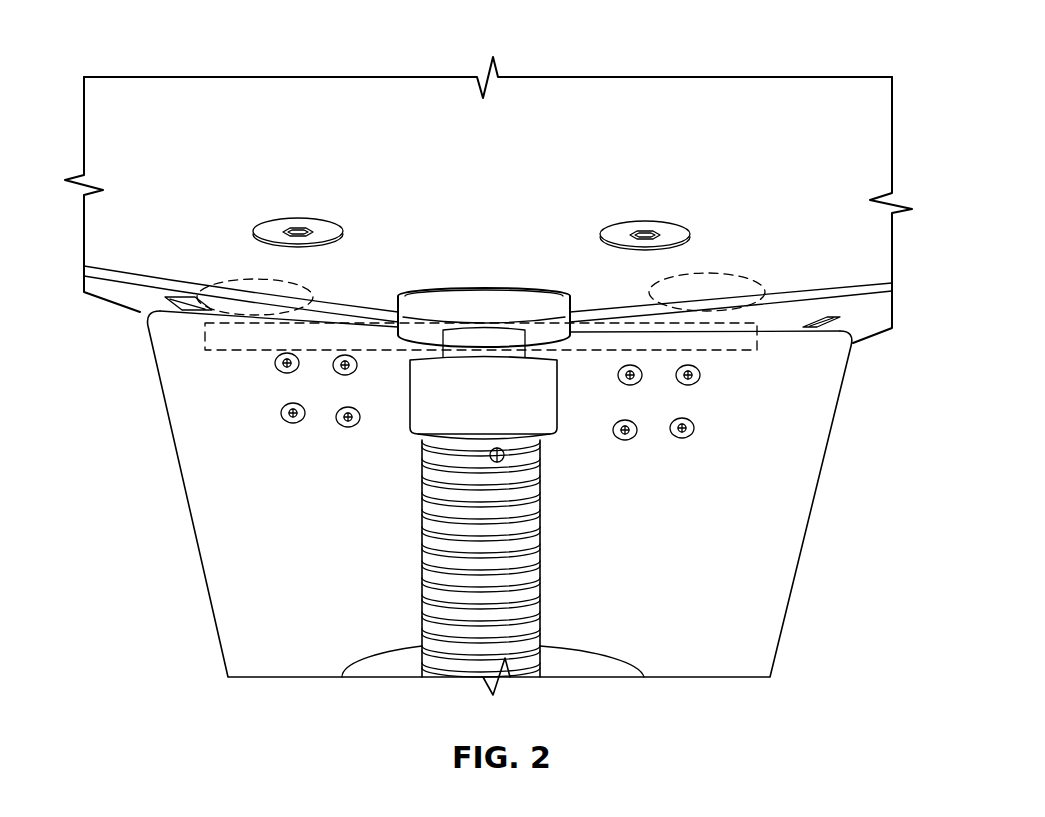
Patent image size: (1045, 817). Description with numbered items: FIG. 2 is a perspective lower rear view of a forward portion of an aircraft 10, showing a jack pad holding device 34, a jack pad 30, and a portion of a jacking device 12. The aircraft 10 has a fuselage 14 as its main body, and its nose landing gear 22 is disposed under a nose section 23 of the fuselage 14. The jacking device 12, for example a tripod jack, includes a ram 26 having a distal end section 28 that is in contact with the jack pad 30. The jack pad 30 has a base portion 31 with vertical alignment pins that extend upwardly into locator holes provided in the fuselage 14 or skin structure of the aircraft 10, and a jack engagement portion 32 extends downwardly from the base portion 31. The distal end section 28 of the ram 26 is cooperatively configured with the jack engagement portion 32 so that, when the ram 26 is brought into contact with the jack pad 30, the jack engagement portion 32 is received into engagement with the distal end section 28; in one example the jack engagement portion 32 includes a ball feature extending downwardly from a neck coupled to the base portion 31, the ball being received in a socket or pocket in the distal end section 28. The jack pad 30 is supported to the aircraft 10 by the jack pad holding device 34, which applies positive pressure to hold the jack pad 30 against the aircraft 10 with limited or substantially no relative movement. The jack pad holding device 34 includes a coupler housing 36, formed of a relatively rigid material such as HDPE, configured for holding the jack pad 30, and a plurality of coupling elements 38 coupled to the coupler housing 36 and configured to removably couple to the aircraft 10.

The aircraft 10 is at (762, 97).
The jacking device 12 is at (420, 567).
The fuselage 14 is at (870, 177).
The nose landing gear 22 is at (186, 395).
The nose section 23 is at (110, 225).
The ram 26 is at (538, 473).
The distal end section 28 is at (540, 385).
The jack pad 30 is at (538, 315).
The base portion 31 is at (435, 302).
The jack engagement portion 32 is at (458, 344).
The jack pad holding device 34 is at (205, 326).
The coupler housing 36 is at (248, 352).
The coupling elements 38 is at (222, 275).